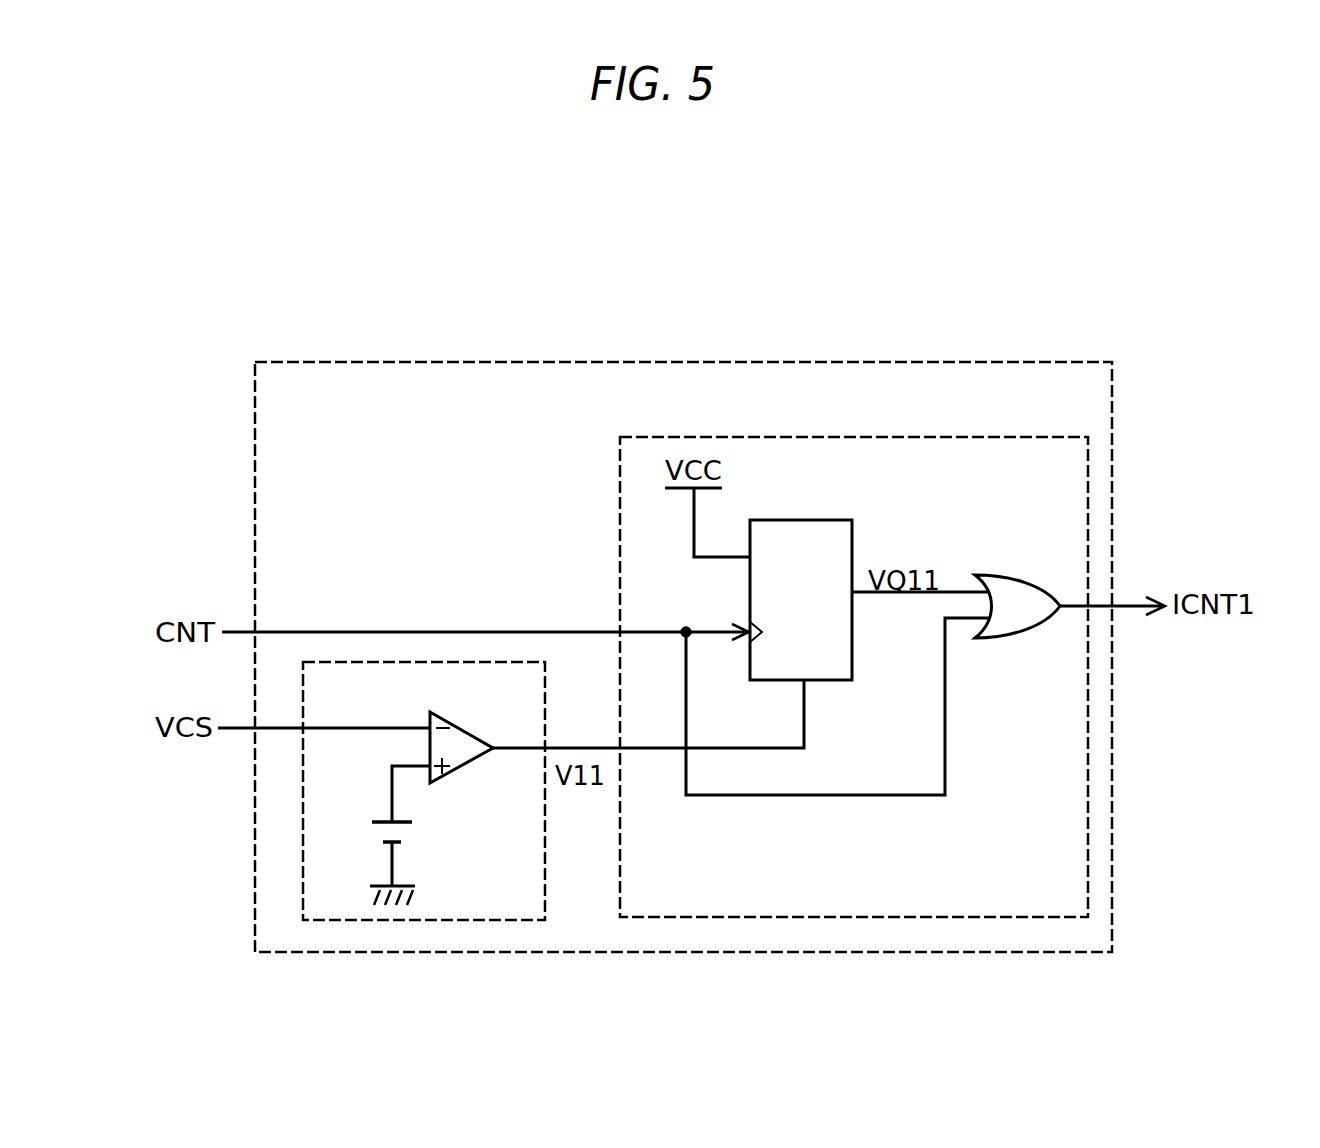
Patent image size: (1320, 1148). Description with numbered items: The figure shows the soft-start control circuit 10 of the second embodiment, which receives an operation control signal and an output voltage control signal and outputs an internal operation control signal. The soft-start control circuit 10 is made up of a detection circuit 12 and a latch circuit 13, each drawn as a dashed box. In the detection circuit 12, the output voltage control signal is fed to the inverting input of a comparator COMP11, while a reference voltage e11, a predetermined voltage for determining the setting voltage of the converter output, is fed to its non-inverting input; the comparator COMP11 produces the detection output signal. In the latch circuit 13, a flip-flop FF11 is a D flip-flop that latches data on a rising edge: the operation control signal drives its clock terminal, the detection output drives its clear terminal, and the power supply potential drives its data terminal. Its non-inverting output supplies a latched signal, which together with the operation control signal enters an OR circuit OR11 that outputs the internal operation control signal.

The soft-start control circuit 10 is at (707, 360).
The detection circuit 12 is at (547, 722).
The latch circuit 13 is at (921, 438).
The flip-flop FF11 is at (803, 530).
The comparator COMP11 is at (479, 743).
The OR circuit OR11 is at (1017, 585).
The reference voltage e11 is at (413, 835).